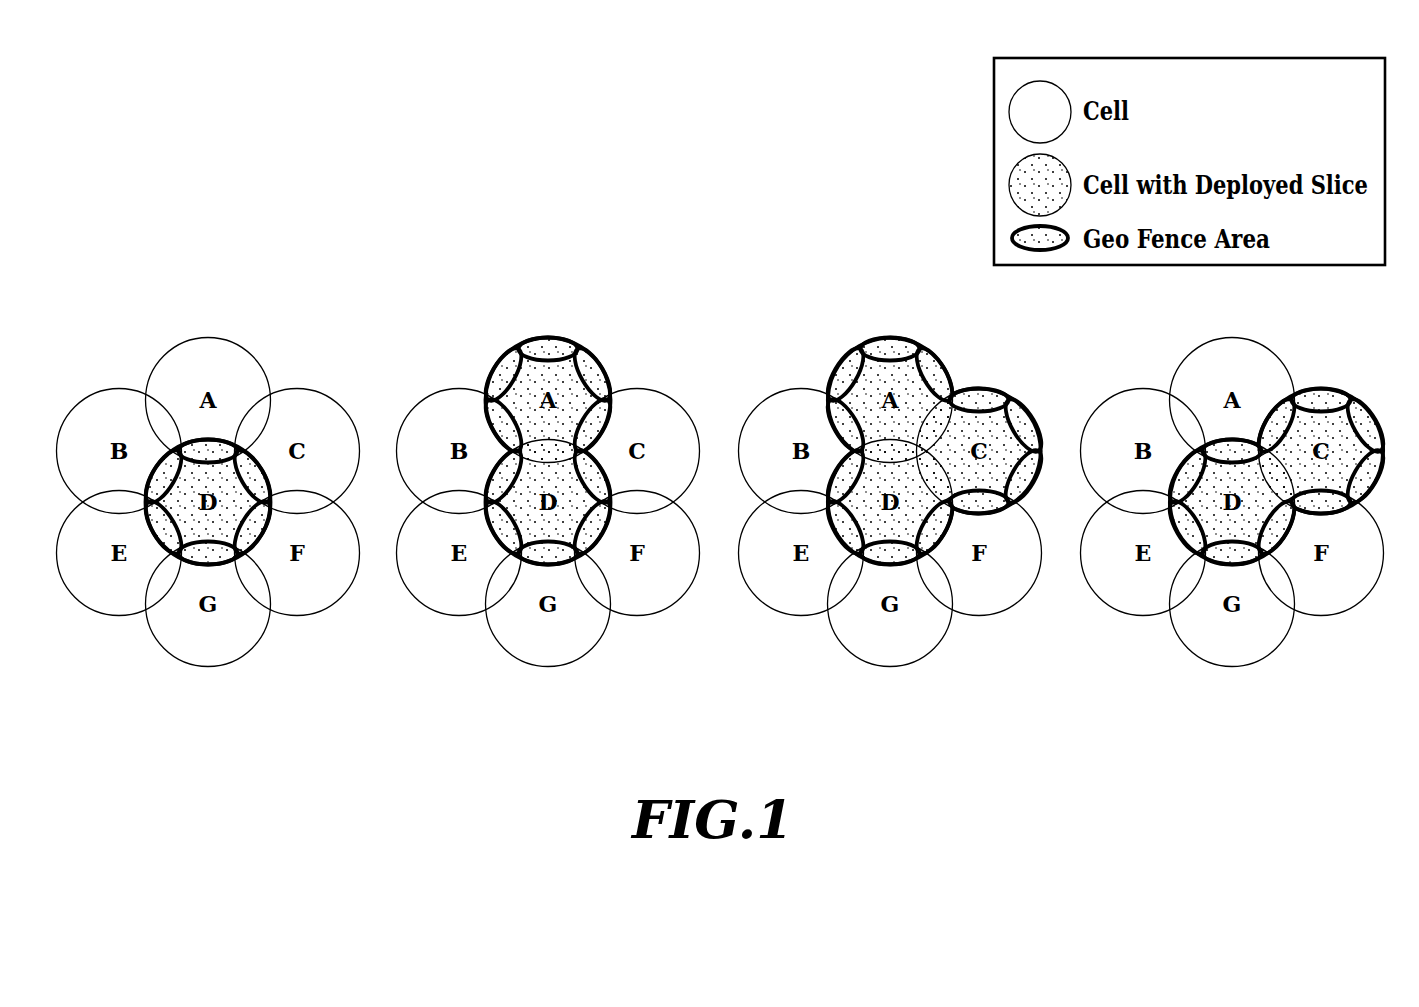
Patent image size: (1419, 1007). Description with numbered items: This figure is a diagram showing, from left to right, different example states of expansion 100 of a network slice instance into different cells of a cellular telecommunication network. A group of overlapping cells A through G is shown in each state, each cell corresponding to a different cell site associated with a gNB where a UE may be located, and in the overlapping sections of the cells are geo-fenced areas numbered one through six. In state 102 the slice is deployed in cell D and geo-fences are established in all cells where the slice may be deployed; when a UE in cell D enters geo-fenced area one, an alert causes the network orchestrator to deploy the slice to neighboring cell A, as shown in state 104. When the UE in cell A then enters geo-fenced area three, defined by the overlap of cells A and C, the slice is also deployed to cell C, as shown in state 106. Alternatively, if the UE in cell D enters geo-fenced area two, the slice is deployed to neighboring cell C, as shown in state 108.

The states of expansion 100 is at (42, 692).
The state 102 is at (110, 355).
The state 104 is at (450, 355).
The state 106 is at (791, 355).
The state 108 is at (1133, 355).